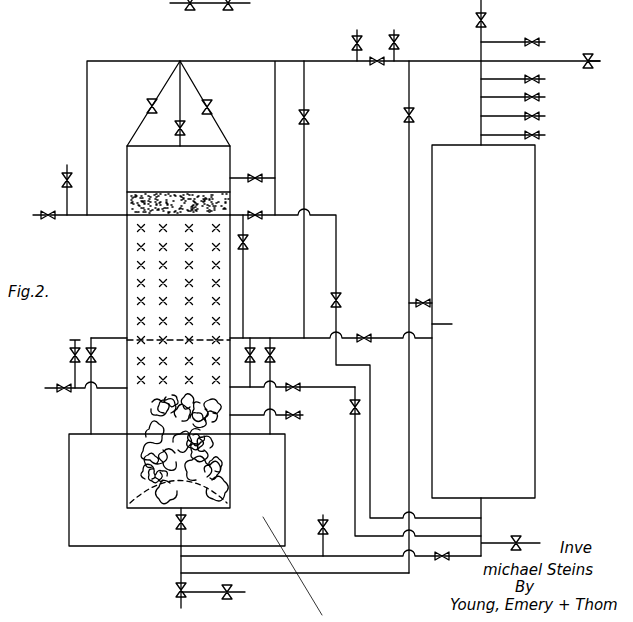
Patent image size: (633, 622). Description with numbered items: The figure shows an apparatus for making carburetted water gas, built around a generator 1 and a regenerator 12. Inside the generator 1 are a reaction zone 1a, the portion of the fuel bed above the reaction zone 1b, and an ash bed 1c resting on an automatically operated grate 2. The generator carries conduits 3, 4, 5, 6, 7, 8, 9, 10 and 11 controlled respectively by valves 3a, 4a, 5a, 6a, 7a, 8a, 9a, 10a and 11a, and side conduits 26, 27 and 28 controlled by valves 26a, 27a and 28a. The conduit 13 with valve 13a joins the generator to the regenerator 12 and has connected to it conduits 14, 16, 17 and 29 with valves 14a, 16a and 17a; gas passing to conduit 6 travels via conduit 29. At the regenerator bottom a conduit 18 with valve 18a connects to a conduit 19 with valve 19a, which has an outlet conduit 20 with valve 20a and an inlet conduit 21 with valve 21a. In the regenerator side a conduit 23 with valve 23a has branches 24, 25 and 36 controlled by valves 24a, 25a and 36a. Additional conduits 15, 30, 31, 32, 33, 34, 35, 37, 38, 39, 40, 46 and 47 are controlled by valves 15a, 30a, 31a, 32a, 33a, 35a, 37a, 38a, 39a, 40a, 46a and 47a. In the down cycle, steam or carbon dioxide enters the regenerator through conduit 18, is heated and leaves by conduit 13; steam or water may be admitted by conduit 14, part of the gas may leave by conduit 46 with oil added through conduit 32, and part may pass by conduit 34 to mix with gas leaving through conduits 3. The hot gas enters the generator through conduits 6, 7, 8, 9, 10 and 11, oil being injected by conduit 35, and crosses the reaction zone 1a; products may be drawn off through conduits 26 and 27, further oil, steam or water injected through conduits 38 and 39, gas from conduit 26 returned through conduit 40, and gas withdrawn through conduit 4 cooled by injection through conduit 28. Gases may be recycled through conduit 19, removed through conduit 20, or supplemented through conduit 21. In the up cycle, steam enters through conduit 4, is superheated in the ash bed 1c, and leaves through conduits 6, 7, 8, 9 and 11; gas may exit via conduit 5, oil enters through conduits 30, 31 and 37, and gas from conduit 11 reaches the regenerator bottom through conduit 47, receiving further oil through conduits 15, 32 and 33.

The generator 1 is at (127, 257).
The reaction zone 1a is at (140, 228).
The portion of fuel bed above reaction zone 1b is at (143, 205).
The ash bed 1c is at (130, 442).
The grate 2 is at (128, 494).
The conduit 3 is at (285, 464).
The valve 3a is at (178, 588).
The conduit 4 is at (183, 535).
The valve 4a is at (176, 522).
The conduit 5 is at (599, 63).
The valve 5a is at (590, 54).
The conduit 6 is at (76, 216).
The valve 6a is at (48, 222).
The conduit 7 is at (166, 83).
The valve 7a is at (148, 106).
The conduit 8 is at (193, 84).
The valve 8a is at (212, 106).
The conduit 9 is at (174, 63).
The valve 9a is at (167, 147).
The conduit 10 is at (238, 178).
The valve 10a is at (255, 172).
The conduit 11 is at (240, 212).
The valve 11a is at (262, 213).
The regenerator 12 is at (536, 263).
The conduit 13 is at (240, 60).
The valve 13a is at (378, 66).
The conduit 14 is at (394, 34).
The valve 14a is at (398, 40).
The conduit 15 is at (485, 80).
The valve 15a is at (540, 80).
The conduit 16 is at (492, 98).
The valve 16a is at (540, 98).
The conduit 17 is at (498, 117).
The valve 17a is at (540, 117).
The conduit 18 is at (492, 543).
The valve 18a is at (522, 538).
The conduit 19 is at (331, 579).
The valve 19a is at (443, 560).
The outlet conduit 20 is at (322, 520).
The valve 20a is at (325, 533).
The inlet conduit 21 is at (230, 4).
The valve 21a is at (232, 592).
The conduit 23 is at (388, 340).
The valve 23a is at (366, 335).
The branch conduit 24 is at (266, 334).
The valve 24a is at (273, 345).
The branch conduit 25 is at (91, 338).
The valve 25a is at (93, 350).
The conduit 26 is at (315, 387).
The valve 26a is at (296, 383).
The conduit 27 is at (57, 390).
The valve 27a is at (60, 396).
The conduit 28 is at (303, 416).
The valve 28a is at (305, 415).
The conduit 29 is at (87, 120).
The conduit 30 is at (65, 197).
The valve 30a is at (66, 175).
The conduit 31 is at (355, 32).
The valve 31a is at (350, 42).
The conduit 32 is at (514, 42).
The valve 32a is at (540, 42).
The conduit 33 is at (497, 136).
The valve 33a is at (540, 137).
The conduit 34 is at (345, 575).
The conduit 35 is at (456, 333).
The valve 35a is at (430, 300).
The branch conduit 36 is at (305, 82).
The valve 36a is at (308, 118).
The conduit 37 is at (246, 255).
The valve 37a is at (255, 240).
The conduit 38 is at (250, 338).
The valve 38a is at (247, 357).
The conduit 39 is at (75, 343).
The valve 39a is at (72, 356).
The conduit 40 is at (355, 462).
The valve 40a is at (357, 410).
The conduit 46 is at (469, 72).
The valve 46a is at (487, 18).
The conduit 47 is at (338, 268).
The valve 47a is at (340, 298).